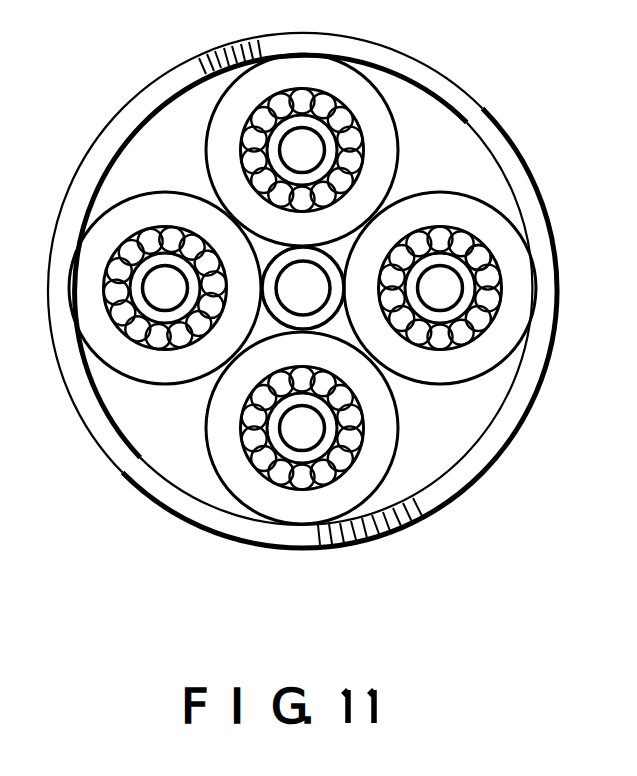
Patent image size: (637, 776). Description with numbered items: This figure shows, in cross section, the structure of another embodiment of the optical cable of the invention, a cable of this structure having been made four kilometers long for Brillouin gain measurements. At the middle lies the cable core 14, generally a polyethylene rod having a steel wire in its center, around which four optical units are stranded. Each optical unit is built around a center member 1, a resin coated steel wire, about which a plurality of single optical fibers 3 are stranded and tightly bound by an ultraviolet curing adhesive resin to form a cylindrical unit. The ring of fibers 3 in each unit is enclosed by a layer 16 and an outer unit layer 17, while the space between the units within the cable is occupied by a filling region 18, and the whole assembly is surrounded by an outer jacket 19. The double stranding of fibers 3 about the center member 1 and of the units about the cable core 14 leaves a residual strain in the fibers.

The center member 1 is at (448, 292).
The single optical fibers 3 is at (468, 241).
The cable core 14 is at (318, 283).
The armor layer 16 is at (497, 315).
The cable sheath 17 is at (495, 351).
The filler 18 is at (468, 415).
The outer jacket 19 is at (482, 460).